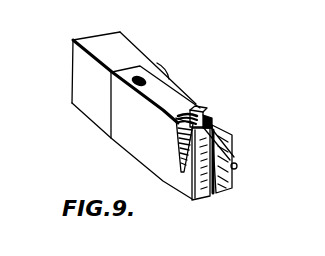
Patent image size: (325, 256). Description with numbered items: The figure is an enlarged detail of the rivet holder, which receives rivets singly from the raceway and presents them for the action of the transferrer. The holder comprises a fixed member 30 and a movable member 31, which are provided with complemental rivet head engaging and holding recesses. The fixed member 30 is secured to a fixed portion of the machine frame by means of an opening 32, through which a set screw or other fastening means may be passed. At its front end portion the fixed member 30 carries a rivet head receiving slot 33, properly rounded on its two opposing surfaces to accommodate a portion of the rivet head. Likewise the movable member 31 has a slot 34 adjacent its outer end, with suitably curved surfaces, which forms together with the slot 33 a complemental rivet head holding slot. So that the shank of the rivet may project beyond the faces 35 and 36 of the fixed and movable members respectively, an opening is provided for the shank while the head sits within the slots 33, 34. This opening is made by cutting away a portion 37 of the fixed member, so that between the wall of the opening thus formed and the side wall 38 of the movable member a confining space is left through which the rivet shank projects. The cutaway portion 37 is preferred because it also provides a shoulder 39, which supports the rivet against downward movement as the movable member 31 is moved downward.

The fixed member 30 is at (140, 133).
The movable member 31 is at (132, 50).
The opening 32 is at (110, 101).
The rivet head receiving slot 33 is at (184, 115).
The slot 34 is at (204, 114).
The face 35 is at (196, 181).
The face 36 is at (224, 179).
The cutaway portion 37 is at (231, 136).
The side wall 38 is at (222, 127).
The shoulder 39 is at (211, 178).